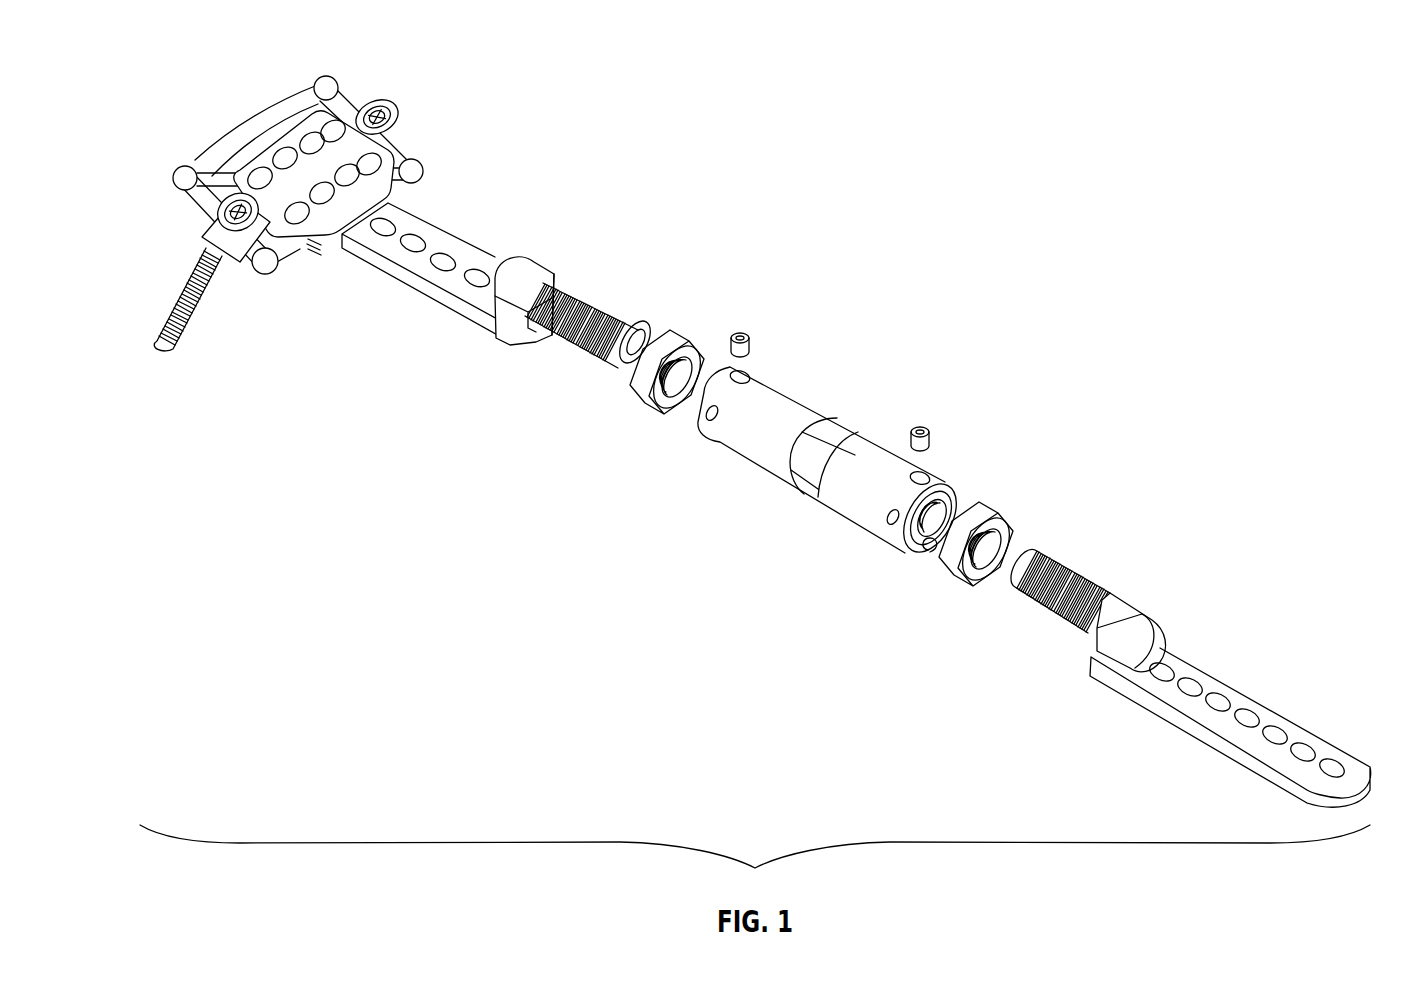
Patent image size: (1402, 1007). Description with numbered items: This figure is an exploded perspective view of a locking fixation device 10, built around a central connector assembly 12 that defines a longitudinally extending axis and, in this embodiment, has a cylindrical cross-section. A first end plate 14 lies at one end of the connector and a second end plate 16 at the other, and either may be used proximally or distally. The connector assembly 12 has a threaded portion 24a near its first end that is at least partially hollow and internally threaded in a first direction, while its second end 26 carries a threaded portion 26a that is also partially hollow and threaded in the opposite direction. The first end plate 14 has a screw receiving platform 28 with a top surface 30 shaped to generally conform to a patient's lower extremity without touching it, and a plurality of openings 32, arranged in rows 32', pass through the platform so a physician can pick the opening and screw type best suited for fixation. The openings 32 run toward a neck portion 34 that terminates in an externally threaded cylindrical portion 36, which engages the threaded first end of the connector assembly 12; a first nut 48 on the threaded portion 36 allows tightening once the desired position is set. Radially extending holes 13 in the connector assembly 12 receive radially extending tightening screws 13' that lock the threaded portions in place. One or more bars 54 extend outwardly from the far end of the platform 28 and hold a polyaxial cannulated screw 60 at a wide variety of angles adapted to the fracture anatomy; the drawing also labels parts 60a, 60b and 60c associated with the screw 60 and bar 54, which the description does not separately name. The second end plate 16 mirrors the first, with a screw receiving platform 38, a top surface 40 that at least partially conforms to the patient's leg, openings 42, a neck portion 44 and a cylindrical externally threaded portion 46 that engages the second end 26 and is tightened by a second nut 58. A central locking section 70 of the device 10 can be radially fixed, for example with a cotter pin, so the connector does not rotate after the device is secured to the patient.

The locking fixation device 10 is at (647, 180).
The connector assembly 12 is at (825, 435).
The radially extending holes 13 is at (836, 419).
The radially extending tightening screws 13' is at (845, 354).
The first end plate 14 is at (490, 273).
The second end plate 16 is at (1191, 656).
The threaded portion 24a is at (692, 421).
The second end 26 is at (960, 490).
The threaded portion 26a is at (935, 545).
The screw receiving platform 28 is at (427, 273).
The top surface 30 is at (508, 256).
The openings 32 is at (430, 274).
The rows of openings 32' is at (315, 137).
The neck portion 34 is at (545, 275).
The externally threaded cylindrical portion 36 is at (600, 304).
The screw receiving platform 38 is at (1230, 722).
The top surface 40 is at (1163, 637).
The openings 42 is at (1243, 721).
The neck portion 44 is at (1135, 607).
The cylindrical externally threaded portion 46 is at (1072, 568).
The first nut 48 is at (671, 334).
The bar 54 is at (282, 195).
The second nut 58 is at (994, 507).
The polyaxial cannulated screw 60 is at (170, 310).
The clamp body 60a is at (205, 237).
The screw 60b is at (372, 104).
The screw 60c is at (398, 130).
The central locking section 70 is at (803, 497).